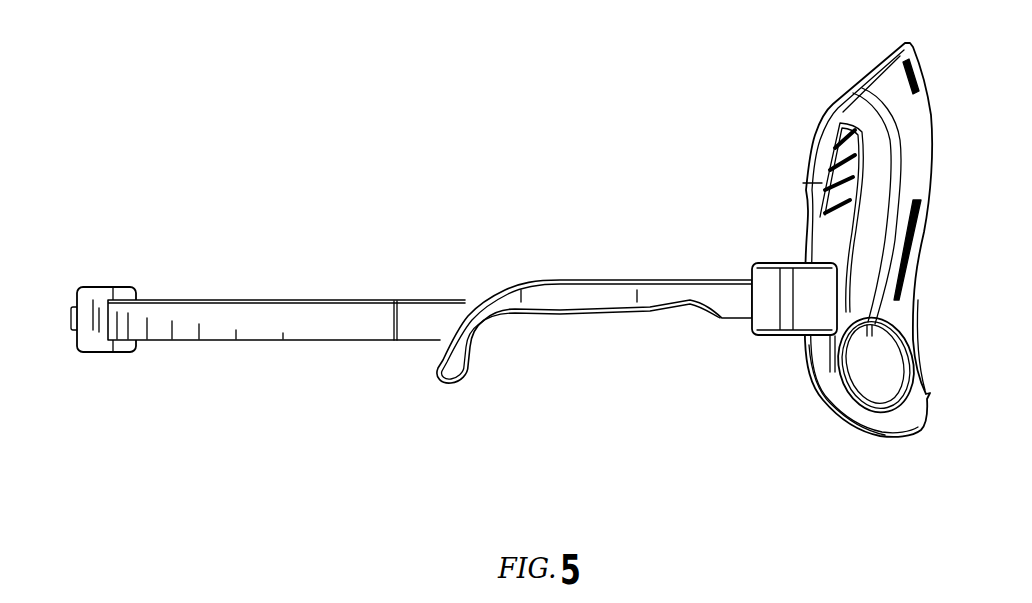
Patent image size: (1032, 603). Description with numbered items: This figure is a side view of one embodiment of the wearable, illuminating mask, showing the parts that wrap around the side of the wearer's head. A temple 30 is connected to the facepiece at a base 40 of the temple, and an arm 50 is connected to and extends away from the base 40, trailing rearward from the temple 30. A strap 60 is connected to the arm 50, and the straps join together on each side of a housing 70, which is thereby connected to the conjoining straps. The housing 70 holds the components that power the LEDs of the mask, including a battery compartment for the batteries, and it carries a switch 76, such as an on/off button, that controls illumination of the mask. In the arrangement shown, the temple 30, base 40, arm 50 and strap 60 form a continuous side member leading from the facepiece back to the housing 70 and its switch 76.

The temple 30 is at (637, 287).
The base 40 is at (800, 358).
The arm 50 is at (742, 338).
The strap 60 is at (477, 287).
The housing 70 is at (77, 280).
The switch 76 is at (70, 321).